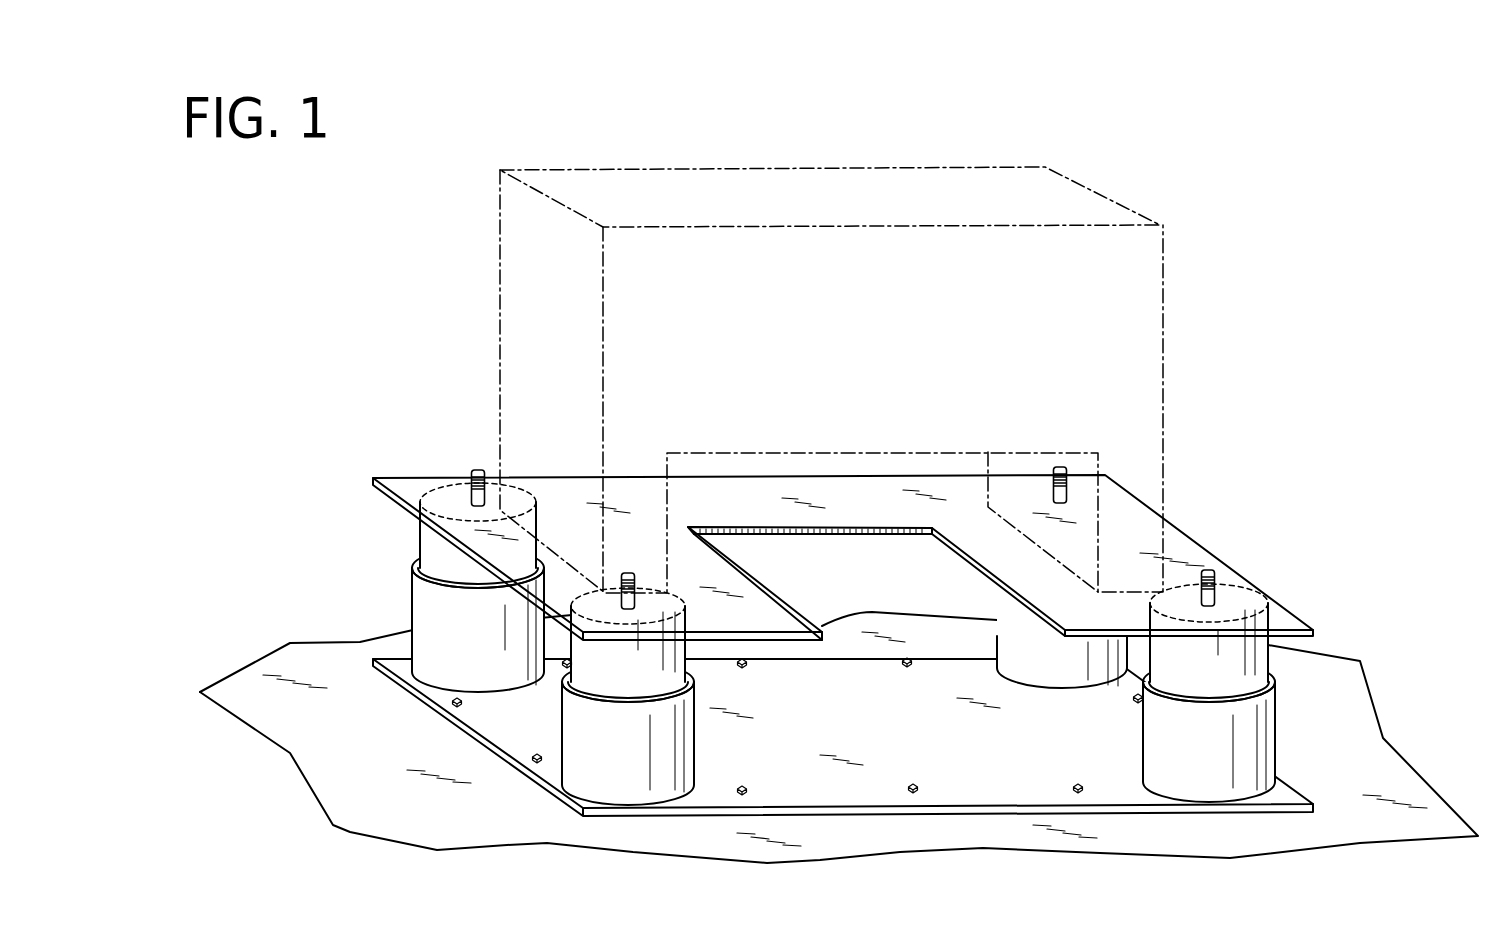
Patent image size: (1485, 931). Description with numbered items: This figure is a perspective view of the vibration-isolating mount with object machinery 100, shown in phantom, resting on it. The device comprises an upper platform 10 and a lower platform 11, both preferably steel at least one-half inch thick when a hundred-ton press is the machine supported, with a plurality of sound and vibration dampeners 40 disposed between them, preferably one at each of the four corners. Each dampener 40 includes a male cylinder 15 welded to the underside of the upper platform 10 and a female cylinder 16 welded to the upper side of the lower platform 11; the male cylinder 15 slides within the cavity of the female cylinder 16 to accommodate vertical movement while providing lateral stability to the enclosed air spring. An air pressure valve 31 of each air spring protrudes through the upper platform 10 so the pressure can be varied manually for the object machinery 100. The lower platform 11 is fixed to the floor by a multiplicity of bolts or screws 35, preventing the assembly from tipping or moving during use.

The object machinery 100 is at (1150, 352).
The upper platform 10 is at (1283, 617).
The lower platform 11 is at (916, 746).
The male cylinder 15 is at (673, 662).
The female cylinder 16 is at (1152, 728).
The air pressure valve 31 is at (1213, 582).
The bolts or screws 35 is at (920, 787).
The sound and vibration dampener 40 is at (1338, 792).